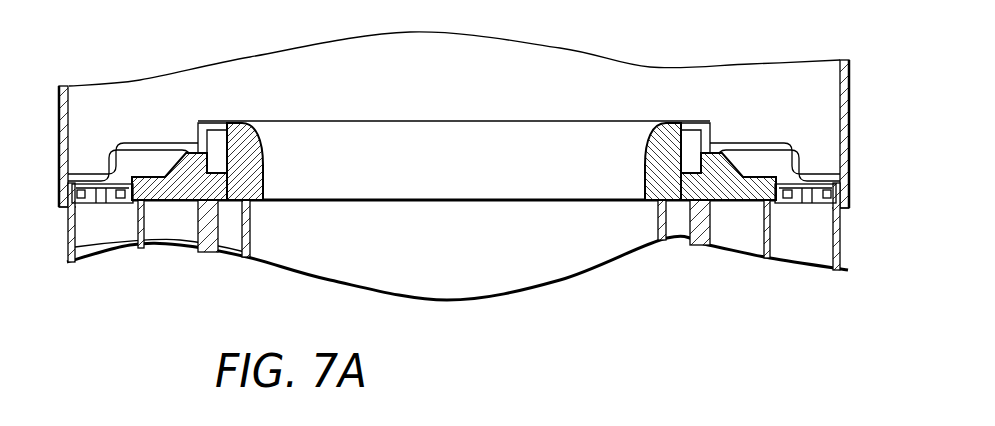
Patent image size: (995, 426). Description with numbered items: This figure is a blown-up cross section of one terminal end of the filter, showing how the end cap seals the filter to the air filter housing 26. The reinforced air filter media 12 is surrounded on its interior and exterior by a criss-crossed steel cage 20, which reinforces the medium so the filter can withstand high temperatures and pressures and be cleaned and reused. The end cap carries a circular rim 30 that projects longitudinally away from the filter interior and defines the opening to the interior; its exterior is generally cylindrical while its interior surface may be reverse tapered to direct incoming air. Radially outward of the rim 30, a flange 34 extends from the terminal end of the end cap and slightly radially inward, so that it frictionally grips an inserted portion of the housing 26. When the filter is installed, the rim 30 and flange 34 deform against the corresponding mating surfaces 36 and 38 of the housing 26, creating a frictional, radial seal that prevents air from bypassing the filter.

The air filter media 12 is at (702, 233).
The steel cage 20 is at (240, 231).
The air filter housing 26 is at (64, 240).
The rim 30 is at (247, 147).
The flange 34 is at (168, 180).
The mating surface 36 is at (693, 132).
The mating surface 38 is at (768, 162).